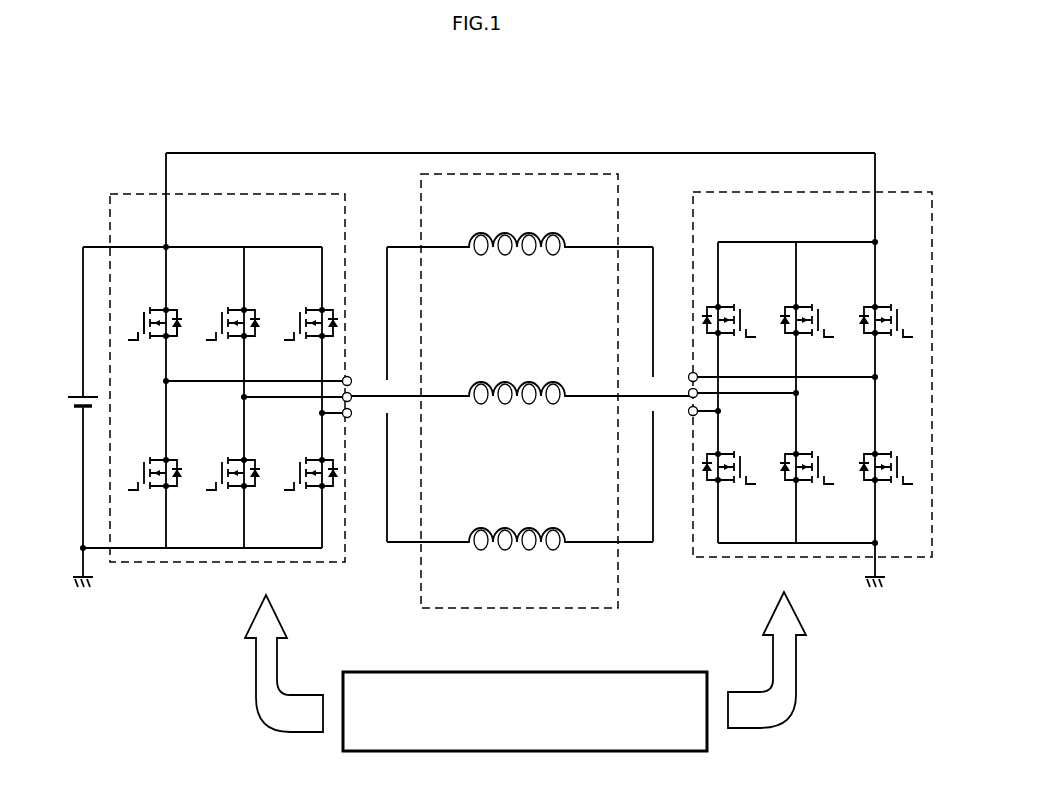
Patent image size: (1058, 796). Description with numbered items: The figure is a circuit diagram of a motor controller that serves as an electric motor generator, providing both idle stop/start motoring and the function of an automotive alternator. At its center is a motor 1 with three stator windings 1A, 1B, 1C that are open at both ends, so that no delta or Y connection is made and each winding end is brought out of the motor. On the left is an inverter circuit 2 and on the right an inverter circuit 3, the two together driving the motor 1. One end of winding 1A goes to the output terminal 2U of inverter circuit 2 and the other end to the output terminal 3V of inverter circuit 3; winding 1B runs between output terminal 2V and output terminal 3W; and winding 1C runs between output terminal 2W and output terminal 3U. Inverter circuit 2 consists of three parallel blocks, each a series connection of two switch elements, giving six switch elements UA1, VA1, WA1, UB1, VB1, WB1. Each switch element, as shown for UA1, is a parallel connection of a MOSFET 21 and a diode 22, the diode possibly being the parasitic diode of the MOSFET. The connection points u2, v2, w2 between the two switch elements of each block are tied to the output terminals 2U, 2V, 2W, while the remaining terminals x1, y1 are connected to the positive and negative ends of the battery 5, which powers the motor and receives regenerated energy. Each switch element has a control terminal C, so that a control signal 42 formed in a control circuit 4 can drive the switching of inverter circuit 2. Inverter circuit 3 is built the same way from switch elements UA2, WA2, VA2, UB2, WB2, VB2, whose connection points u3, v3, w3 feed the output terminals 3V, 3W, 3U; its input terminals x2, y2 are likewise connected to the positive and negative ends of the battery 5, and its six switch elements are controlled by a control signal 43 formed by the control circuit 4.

The motor 1 is at (520, 359).
The stator winding 1A is at (522, 258).
The stator winding 1B is at (522, 407).
The stator winding 1C is at (522, 553).
The inverter circuit 2 is at (262, 397).
The output terminal 2U is at (350, 376).
The output terminal 2V is at (352, 393).
The output terminal 2W is at (352, 410).
The inverter circuit 3 is at (793, 386).
The output terminal 3U is at (690, 416).
The output terminal 3V is at (698, 377).
The output terminal 3W is at (683, 373).
The control circuit 4 is at (635, 671).
The control signal 42 is at (250, 672).
The control signal 43 is at (800, 672).
The battery 5 is at (79, 392).
The MOSFET 21 is at (142, 312).
The diode 22 is at (180, 330).
The control terminal C is at (138, 337).
The terminal x1 is at (164, 246).
The terminal y1 is at (88, 552).
The input terminal x2 is at (878, 240).
The input terminal y2 is at (880, 548).
The connection point u2 is at (160, 384).
The connection point v2 is at (235, 398).
The connection point w2 is at (318, 414).
The connection point u3 is at (722, 411).
The connection point v3 is at (878, 380).
The connection point w3 is at (800, 394).
The switch element UA1 is at (212, 278).
The switch element VA1 is at (243, 308).
The switch element WA1 is at (321, 308).
The switch element UB1 is at (151, 488).
The switch element VB1 is at (230, 488).
The switch element WB1 is at (305, 488).
The switch element UA2 is at (770, 278).
The switch element WA2 is at (852, 278).
The switch element VA2 is at (925, 278).
The switch element UB2 is at (734, 483).
The switch element WB2 is at (814, 483).
The switch element VB2 is at (887, 483).